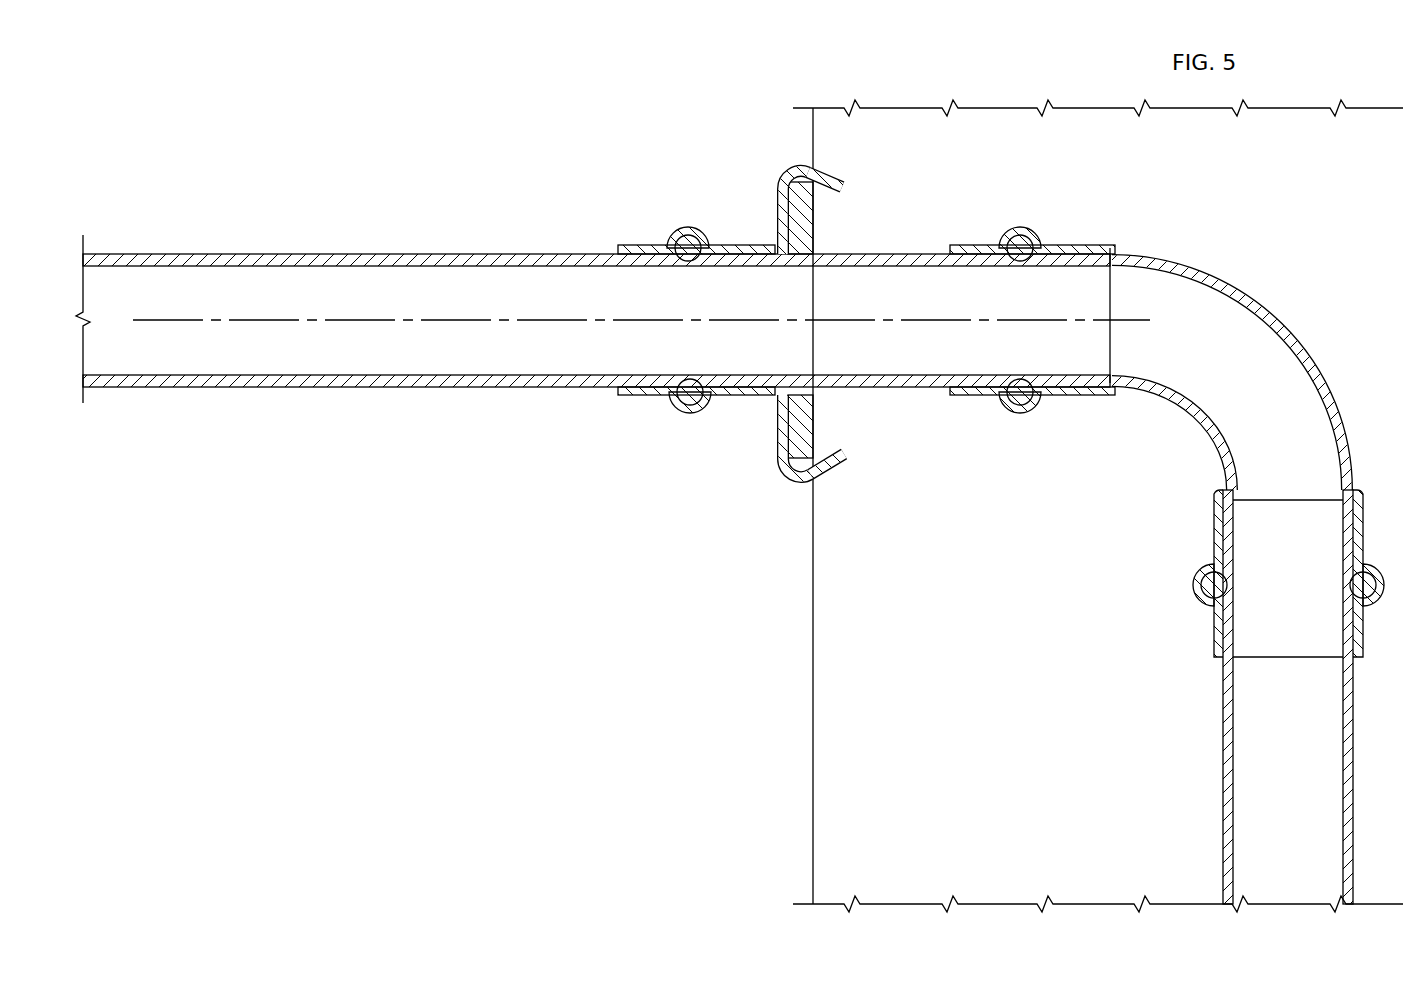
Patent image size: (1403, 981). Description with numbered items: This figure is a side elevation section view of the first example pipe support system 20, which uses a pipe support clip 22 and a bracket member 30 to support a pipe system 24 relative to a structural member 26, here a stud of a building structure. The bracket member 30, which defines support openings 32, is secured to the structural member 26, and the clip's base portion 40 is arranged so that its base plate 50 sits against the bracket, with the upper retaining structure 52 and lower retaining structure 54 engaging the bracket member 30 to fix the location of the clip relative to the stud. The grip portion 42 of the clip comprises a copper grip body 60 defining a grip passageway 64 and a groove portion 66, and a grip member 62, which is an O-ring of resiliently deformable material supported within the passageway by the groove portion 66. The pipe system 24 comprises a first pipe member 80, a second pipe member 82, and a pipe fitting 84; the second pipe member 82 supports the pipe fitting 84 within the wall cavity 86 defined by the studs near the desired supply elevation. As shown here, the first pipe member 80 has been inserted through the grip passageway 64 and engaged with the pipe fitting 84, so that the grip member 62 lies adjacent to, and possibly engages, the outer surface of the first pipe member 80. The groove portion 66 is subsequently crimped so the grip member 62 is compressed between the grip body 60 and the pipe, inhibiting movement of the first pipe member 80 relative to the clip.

The pipe support system 20 is at (583, 133).
The pipe support clip 22 is at (633, 243).
The pipe system 24 is at (407, 244).
The structural member 26 is at (810, 638).
The bracket member 30 is at (786, 200).
The support openings 32 is at (806, 272).
The base portion 40 is at (782, 158).
The grip portion 42 is at (632, 401).
The base plate 50 is at (783, 428).
The upper retaining structure 52 is at (828, 166).
The lower retaining structure 54 is at (835, 468).
The grip body 60 is at (647, 392).
The grip member 62 is at (687, 413).
The grip passageway 64 is at (643, 386).
The groove portion 66 is at (689, 229).
The first pipe member 80 is at (480, 387).
The second pipe member 82 is at (1224, 790).
The pipe fitting 84 is at (1256, 292).
The wall cavity 86 is at (993, 621).